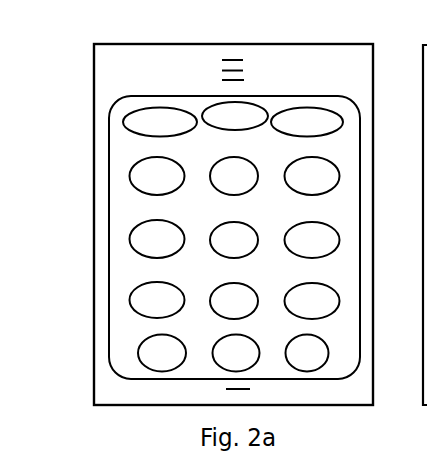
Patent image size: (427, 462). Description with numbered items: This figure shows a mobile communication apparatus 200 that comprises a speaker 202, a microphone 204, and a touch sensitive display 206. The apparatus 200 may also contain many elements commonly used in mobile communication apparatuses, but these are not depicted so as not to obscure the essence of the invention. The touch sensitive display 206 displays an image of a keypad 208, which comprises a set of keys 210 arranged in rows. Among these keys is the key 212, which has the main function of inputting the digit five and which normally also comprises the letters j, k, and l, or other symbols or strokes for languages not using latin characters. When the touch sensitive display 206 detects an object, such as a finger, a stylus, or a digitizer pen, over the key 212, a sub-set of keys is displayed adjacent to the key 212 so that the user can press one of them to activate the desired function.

The mobile communication apparatus 200 is at (299, 71).
The speaker 202 is at (226, 70).
The microphone 204 is at (187, 415).
The touch sensitive display 206 is at (126, 323).
The keypad 208 is at (203, 227).
The set of keys 210 is at (135, 267).
The key 212 is at (247, 238).